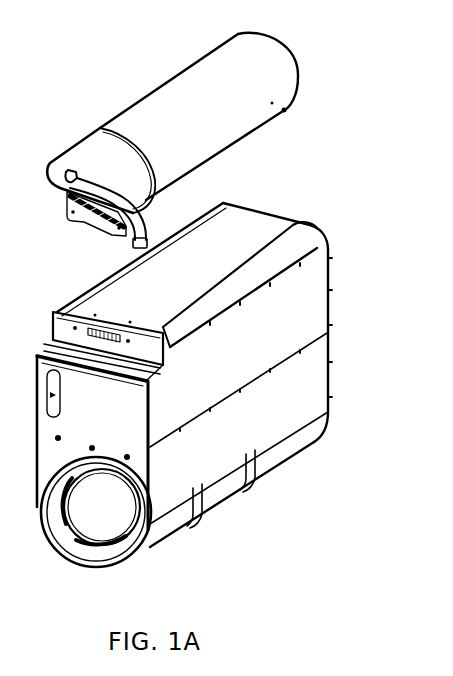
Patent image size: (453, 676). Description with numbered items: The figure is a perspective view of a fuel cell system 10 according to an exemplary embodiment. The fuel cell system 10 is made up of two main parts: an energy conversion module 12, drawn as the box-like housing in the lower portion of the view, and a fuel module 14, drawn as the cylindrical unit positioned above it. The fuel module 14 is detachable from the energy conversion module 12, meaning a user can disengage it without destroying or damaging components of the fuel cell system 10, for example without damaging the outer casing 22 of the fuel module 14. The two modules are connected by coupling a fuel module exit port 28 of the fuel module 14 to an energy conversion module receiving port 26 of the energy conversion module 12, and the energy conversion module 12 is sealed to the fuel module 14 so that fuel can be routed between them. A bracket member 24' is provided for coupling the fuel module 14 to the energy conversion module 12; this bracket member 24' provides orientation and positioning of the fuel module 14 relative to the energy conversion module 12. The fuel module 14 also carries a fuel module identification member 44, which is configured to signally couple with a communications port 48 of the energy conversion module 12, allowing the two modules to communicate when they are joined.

The fuel cell system 10 is at (98, 79).
The energy conversion module 12 is at (246, 283).
The fuel module 14 is at (272, 75).
The outer casing 22 is at (204, 86).
The bracket member 24' is at (68, 216).
The energy conversion module receiving port 26 is at (130, 367).
The fuel module exit port 28 is at (140, 214).
The fuel module identification member 44 is at (115, 227).
The communications port 48 is at (67, 313).